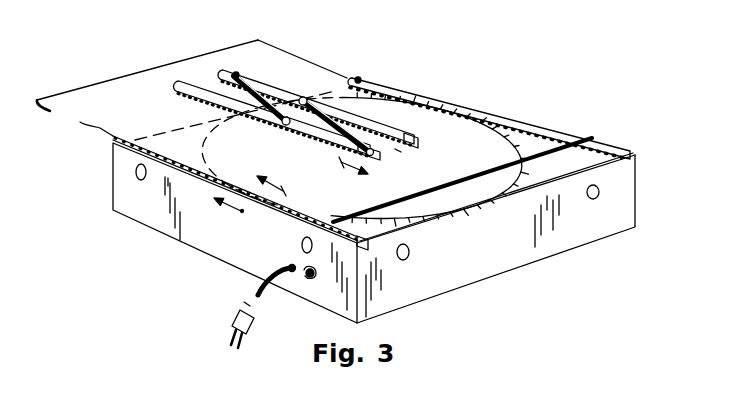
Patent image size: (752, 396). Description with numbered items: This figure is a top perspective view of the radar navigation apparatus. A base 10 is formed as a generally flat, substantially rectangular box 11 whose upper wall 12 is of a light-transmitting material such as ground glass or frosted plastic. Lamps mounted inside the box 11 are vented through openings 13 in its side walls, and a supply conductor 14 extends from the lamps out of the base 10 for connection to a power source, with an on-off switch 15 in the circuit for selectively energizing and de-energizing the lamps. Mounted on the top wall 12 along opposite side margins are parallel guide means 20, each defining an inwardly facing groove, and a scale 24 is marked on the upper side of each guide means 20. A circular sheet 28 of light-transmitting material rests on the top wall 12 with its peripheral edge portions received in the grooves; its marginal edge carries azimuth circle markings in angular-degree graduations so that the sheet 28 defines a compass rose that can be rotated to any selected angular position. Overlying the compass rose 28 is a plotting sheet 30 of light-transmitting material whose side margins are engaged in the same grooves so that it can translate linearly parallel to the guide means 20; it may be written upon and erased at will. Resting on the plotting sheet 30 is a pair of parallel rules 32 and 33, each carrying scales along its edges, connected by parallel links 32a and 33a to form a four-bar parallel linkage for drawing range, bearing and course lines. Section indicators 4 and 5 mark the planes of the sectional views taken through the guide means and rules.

The base 10 is at (646, 174).
The box 11 is at (487, 276).
The upper wall 12 is at (598, 150).
The openings 13 is at (600, 192).
The supply conductor 14 is at (257, 281).
The on-off switch 15 is at (312, 278).
The guide means 20 is at (92, 126).
The scale 24 is at (148, 149).
The circular sheet 28 is at (465, 110).
The plotting sheet 30 is at (535, 146).
The rule 32 is at (176, 80).
The rule 33 is at (228, 70).
The link 32a is at (333, 106).
The link 33a is at (288, 92).
The section line 4- 4 is at (241, 186).
The section line 5- 5 is at (375, 169).